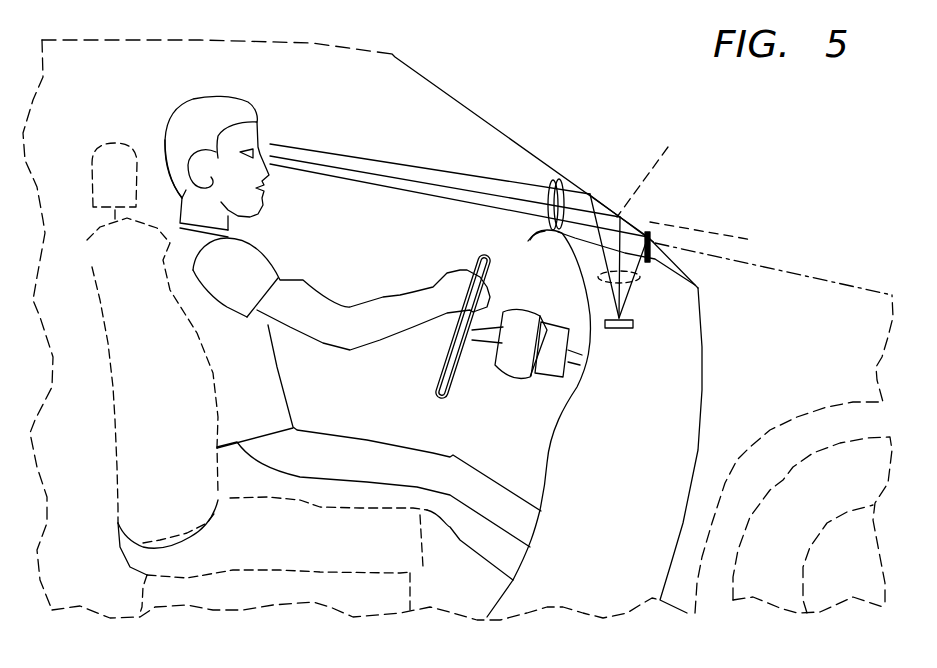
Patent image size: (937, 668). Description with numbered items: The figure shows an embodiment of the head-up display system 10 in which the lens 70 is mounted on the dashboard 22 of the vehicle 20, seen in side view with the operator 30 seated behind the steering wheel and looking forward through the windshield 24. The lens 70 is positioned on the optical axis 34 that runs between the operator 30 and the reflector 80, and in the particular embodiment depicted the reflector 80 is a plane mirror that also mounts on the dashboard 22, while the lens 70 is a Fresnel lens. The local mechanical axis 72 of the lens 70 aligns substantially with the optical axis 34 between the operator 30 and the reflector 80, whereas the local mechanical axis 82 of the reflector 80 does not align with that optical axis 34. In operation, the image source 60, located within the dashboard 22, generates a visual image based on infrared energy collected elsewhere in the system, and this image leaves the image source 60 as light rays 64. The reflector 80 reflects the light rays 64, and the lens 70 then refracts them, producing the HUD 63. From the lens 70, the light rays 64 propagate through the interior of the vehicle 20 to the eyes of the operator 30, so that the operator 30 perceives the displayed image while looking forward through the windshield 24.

The system 10 is at (740, 133).
The vehicle 20 is at (815, 278).
The dashboard 22 is at (548, 443).
The windshield 24 is at (490, 125).
The operator 30 is at (163, 135).
The optical axis 34 is at (738, 237).
The image source 60 is at (618, 330).
The HUD 63 is at (537, 236).
The light rays 64 is at (598, 276).
The lens 70 is at (550, 190).
The local mechanical axis of lens 72 is at (773, 269).
The reflector 80 is at (640, 222).
The local mechanical axis of reflector 82 is at (645, 178).